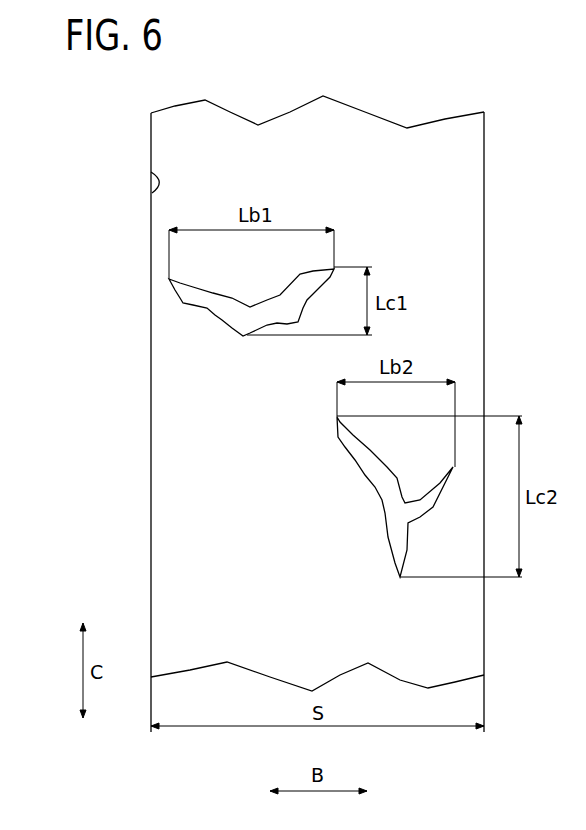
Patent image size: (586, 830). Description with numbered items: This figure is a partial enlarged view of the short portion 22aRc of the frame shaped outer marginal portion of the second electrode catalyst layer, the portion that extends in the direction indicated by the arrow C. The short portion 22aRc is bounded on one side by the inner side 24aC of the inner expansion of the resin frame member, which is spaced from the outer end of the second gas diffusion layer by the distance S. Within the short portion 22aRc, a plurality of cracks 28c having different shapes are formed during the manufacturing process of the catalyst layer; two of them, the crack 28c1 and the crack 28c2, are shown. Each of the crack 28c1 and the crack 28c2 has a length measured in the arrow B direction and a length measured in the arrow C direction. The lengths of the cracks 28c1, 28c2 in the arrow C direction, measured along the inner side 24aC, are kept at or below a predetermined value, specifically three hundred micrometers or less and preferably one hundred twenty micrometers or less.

The short portion 22aRc is at (180, 545).
The inner side 24aC is at (151, 176).
The cracks 28c is at (67, 388).
The crack 28c1 is at (218, 319).
The crack 28c2 is at (348, 448).